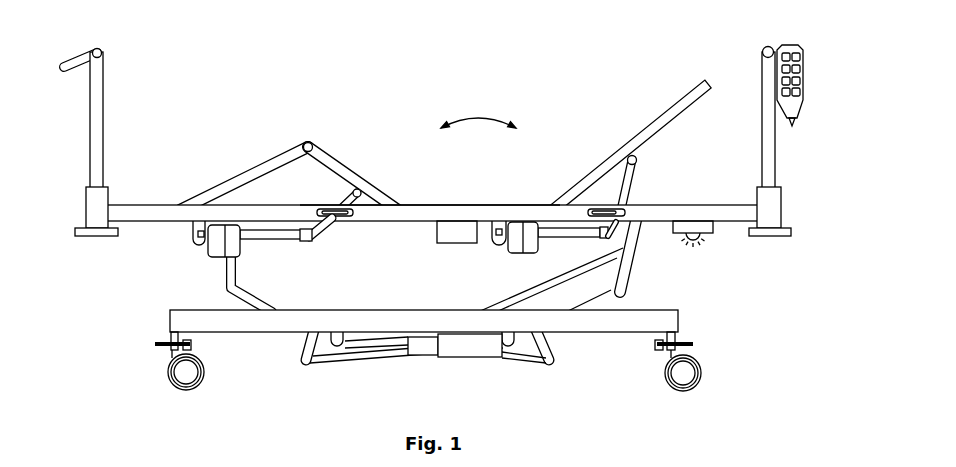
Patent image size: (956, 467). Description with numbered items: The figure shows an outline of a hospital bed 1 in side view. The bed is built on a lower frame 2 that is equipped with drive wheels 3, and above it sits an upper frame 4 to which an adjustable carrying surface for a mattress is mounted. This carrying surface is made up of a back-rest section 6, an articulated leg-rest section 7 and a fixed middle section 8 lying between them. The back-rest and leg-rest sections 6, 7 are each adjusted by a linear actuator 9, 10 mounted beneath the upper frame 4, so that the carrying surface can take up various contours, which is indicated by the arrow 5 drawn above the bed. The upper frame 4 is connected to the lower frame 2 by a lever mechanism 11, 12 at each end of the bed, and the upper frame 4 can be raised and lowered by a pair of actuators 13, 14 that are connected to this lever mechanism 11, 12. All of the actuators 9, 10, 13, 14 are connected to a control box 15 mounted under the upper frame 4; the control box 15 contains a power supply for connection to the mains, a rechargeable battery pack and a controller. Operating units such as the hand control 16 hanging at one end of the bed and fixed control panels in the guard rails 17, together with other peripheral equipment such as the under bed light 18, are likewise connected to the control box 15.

The hospital bed 1 is at (294, 44).
The lower frame 2 is at (173, 387).
The drive wheels 3 is at (617, 326).
The upper frame 4 is at (665, 208).
The arrow 5 is at (478, 112).
The back-rest section 6 is at (620, 146).
The leg-rest section 7 is at (313, 140).
The middle section 8 is at (457, 208).
The linear actuator 9 is at (510, 253).
The linear actuator 10 is at (270, 242).
The lever mechanism 11 is at (628, 288).
The lever mechanism 12 is at (230, 280).
The actuator 13 is at (443, 353).
The actuator 14 is at (365, 338).
The control box 15 is at (463, 240).
The hand control 16 is at (794, 42).
The guard rail 17 is at (82, 53).
The under bed light 18 is at (708, 233).